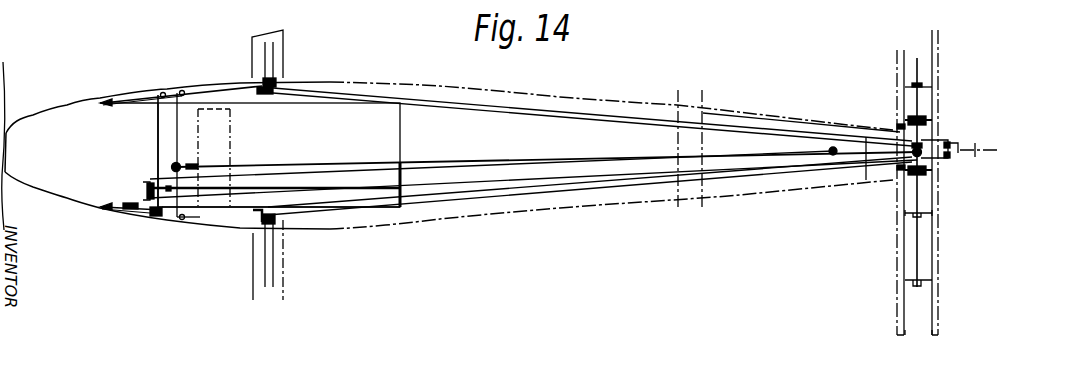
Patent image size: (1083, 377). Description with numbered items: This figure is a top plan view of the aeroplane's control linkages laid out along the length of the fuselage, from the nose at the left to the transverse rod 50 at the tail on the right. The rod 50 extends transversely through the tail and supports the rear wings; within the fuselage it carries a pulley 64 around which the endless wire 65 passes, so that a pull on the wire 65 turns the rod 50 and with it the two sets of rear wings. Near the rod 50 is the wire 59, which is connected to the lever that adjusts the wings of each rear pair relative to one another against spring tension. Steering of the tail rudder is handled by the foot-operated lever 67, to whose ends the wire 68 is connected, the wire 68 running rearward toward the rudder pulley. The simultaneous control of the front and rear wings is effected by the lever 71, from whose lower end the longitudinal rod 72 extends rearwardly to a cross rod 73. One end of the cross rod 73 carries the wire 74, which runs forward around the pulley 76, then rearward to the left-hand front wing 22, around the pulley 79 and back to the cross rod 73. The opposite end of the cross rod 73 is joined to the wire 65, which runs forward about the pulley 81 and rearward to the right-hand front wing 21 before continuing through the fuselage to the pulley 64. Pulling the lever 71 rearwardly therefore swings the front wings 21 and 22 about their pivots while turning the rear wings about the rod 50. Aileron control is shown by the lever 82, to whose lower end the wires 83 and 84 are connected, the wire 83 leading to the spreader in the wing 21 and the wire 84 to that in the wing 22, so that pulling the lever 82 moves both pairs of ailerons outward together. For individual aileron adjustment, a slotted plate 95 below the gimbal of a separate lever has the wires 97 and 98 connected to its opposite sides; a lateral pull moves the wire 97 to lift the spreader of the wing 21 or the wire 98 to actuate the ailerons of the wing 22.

The front wing 21 is at (282, 48).
The front wing 22 is at (283, 268).
The rod 50 is at (921, 233).
The wire 59 is at (873, 168).
The pulley 64 is at (923, 151).
The wire 65 is at (358, 102).
The foot-operated lever 67 is at (145, 184).
The wire 68 is at (295, 175).
The lever 71 is at (173, 219).
The longitudinal rod 72 is at (316, 189).
The cross rod 73 is at (402, 140).
The wire 74 is at (483, 194).
The pulley 76 is at (105, 217).
The pulley 79 is at (832, 155).
The pulley 81 is at (105, 100).
The lever 82 is at (135, 214).
The wire 83 is at (158, 150).
The wire 84 is at (228, 216).
The slotted plate 95 is at (176, 163).
The wire 97 is at (177, 118).
The wire 98 is at (184, 171).